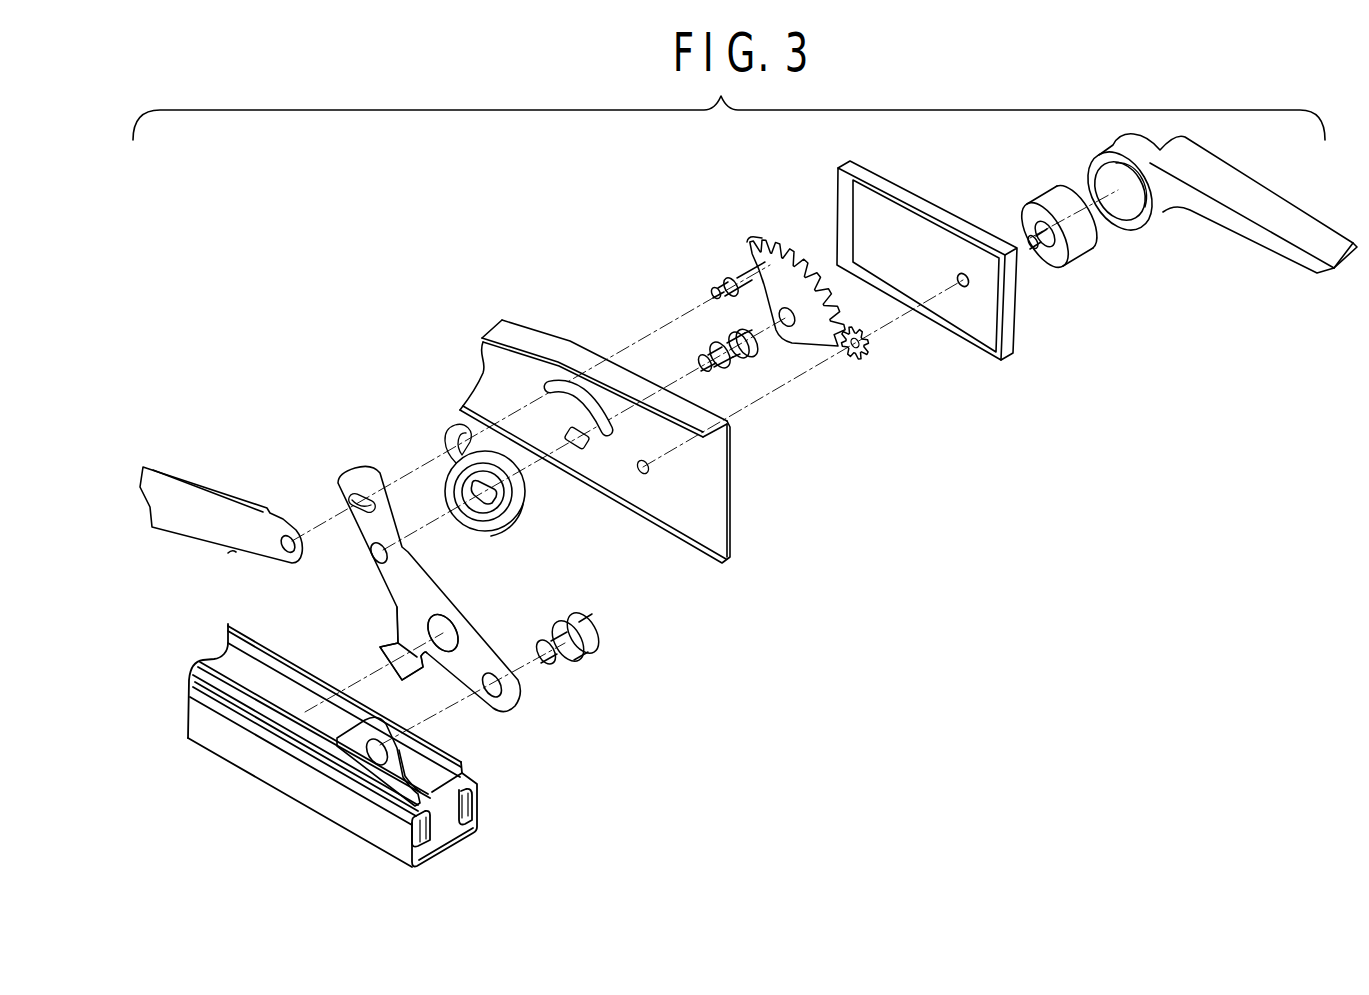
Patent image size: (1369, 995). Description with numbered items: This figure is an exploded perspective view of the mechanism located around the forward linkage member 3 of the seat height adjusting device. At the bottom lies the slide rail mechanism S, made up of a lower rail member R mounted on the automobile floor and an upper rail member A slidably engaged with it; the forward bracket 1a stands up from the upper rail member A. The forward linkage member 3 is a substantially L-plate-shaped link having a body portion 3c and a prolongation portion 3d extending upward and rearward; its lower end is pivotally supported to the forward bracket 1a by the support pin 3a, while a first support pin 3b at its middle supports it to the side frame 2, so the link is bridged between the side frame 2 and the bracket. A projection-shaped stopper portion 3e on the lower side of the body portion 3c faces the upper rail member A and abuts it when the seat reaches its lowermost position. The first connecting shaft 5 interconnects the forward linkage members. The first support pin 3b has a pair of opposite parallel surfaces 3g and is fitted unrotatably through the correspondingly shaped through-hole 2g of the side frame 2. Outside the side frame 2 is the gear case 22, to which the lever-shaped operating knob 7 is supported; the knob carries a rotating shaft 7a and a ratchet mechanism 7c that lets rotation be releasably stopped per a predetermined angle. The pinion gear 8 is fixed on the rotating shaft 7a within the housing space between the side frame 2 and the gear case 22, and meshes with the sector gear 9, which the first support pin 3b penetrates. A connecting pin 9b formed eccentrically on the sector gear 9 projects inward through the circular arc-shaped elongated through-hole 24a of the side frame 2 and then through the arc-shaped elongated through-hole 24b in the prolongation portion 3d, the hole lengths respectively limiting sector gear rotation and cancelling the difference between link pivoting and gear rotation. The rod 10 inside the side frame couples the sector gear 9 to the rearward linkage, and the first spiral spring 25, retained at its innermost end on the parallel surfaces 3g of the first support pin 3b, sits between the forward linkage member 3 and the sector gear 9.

The forward bracket 1a is at (348, 712).
The side frame 2 is at (700, 563).
The through-hole 2g is at (577, 448).
The forward linkage member 3 is at (513, 707).
The support pin 3a is at (590, 643).
The first support pin 3b is at (727, 345).
The body portion 3c is at (488, 635).
The prolongation portion 3d is at (375, 470).
The stopper portion 3e is at (397, 608).
The opposite parallel surfaces 3g is at (732, 370).
The first connecting shaft 5 is at (397, 620).
The operating knob 7 is at (1197, 217).
The rotating shaft 7a is at (1043, 250).
The ratchet mechanism 7c is at (1092, 252).
The pinion gear 8 is at (868, 358).
The sector gear 9 is at (764, 240).
The connecting pin 9b is at (737, 272).
The rod 10 is at (253, 503).
The gear case 22 is at (1020, 310).
The elongated through-hole 24a is at (560, 380).
The elongated through-hole 24b is at (352, 473).
The first spiral spring 25 is at (447, 437).
The upper rail member A is at (197, 680).
The lower rail member R is at (197, 747).
The slide rail mechanism S is at (248, 775).